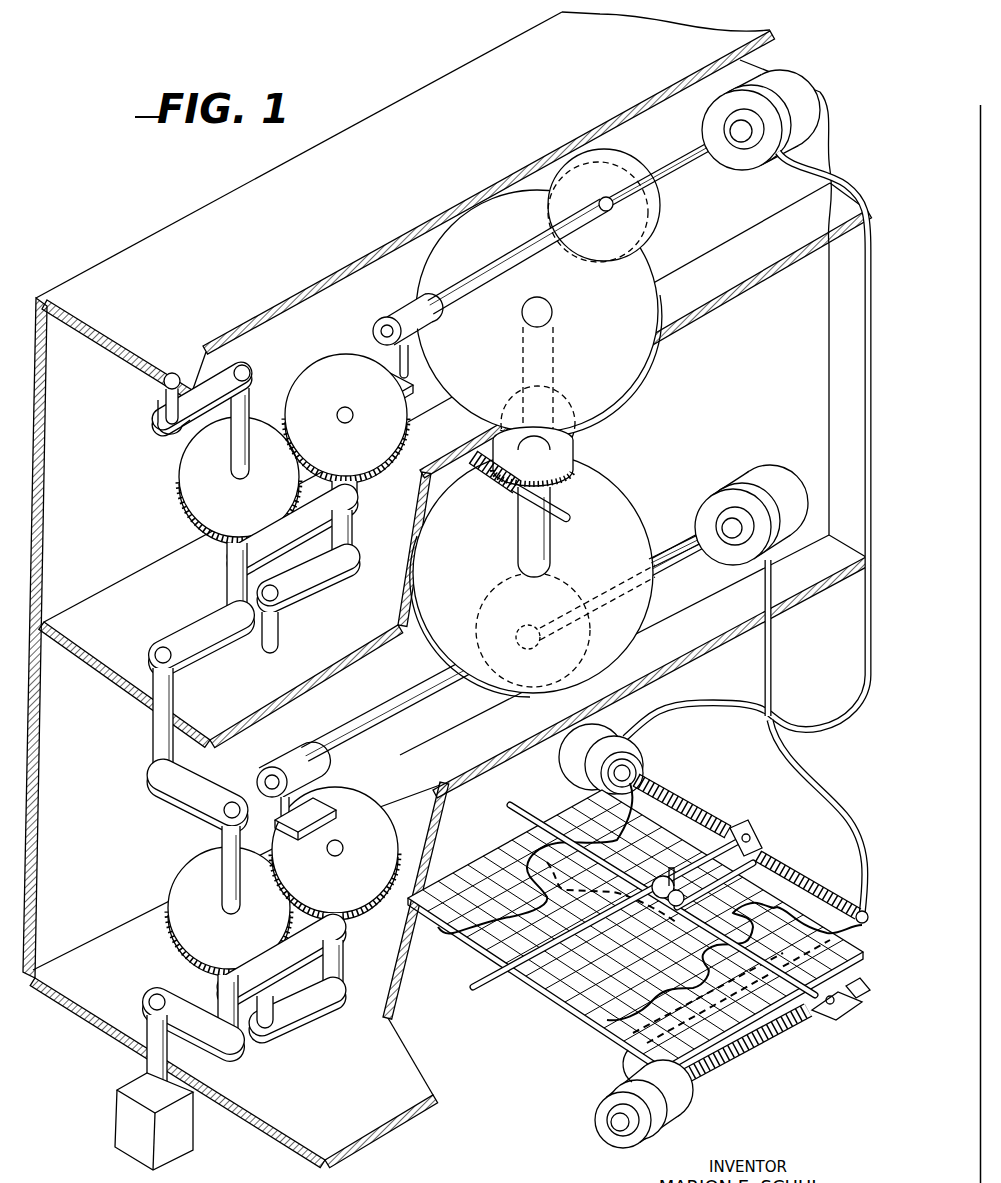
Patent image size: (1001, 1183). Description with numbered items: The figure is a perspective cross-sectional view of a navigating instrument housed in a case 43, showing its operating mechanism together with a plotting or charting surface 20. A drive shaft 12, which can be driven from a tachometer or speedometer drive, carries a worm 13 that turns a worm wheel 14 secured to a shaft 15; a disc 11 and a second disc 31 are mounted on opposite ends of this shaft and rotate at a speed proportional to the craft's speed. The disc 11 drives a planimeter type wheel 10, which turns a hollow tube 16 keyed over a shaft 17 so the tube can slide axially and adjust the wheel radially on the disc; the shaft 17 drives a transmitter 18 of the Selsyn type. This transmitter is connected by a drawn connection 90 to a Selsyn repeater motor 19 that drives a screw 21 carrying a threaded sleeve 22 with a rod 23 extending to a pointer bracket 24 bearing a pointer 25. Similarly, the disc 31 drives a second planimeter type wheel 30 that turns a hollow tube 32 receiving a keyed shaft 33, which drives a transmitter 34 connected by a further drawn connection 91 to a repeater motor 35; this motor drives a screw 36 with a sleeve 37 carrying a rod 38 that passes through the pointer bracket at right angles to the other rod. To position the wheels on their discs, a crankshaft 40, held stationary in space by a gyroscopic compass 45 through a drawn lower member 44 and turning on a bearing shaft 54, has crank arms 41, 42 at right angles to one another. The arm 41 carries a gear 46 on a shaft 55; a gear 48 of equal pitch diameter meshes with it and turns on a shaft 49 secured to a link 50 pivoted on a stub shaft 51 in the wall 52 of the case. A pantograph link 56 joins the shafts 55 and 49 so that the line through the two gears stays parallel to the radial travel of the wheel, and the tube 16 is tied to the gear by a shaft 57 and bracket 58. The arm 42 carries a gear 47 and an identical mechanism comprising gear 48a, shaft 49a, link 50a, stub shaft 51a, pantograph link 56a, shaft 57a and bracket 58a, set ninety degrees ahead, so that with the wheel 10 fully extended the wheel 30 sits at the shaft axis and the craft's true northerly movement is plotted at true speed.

The planimeter type wheel 10 is at (660, 208).
The disc 11 is at (648, 276).
The drive shaft 12 is at (572, 518).
The worm 13 is at (488, 478).
The worm wheel 14 is at (576, 447).
The shaft 15 is at (552, 311).
The hollow tube 16 is at (508, 246).
The shaft 17 is at (690, 152).
The transmitter 18 is at (781, 94).
The Selsyn repeater motor 19 is at (574, 766).
The plotting or charting surface 20 is at (462, 862).
The screw 21 is at (668, 792).
The sleeve 22 is at (754, 842).
The rod 23 is at (690, 876).
The pointer bracket 24 is at (674, 868).
The pointer 25 is at (790, 868).
The second planimeter type wheel 30 is at (586, 636).
The disc 31 is at (640, 530).
The hollow tube 32 is at (389, 700).
The shaft 33 is at (684, 520).
The transmitter 34 is at (775, 490).
The repeater motor 35 is at (627, 1137).
The screw 36 is at (722, 1076).
The sleeve 37 is at (820, 1020).
The rod 38 is at (787, 992).
The crankshaft 40 is at (152, 735).
The crank arm 41 is at (216, 362).
The crank arm 42 is at (220, 786).
The case 43 is at (188, 234).
The rod 44 is at (150, 1060).
The gyroscopic compass 45 is at (122, 1112).
The gear 46 is at (180, 483).
The gear 47 is at (185, 880).
The gear 48 is at (335, 362).
The gear 48a is at (378, 815).
The shaft 49 is at (350, 536).
The shaft 49a is at (338, 962).
The link 50 is at (315, 583).
The link 50a is at (330, 1006).
The stub shaft 51 is at (279, 635).
The stub shaft 51a is at (265, 1018).
The wall 52 is at (290, 696).
The bearing shaft 54 is at (158, 401).
The shaft 55 is at (232, 458).
The pantograph link 56 is at (222, 560).
The pantograph link 56a is at (276, 990).
The shaft 57 is at (410, 355).
The shaft 57a is at (292, 806).
The bracket 58 is at (405, 407).
The bracket 58a is at (304, 838).
The cable 90 is at (826, 722).
The cable 91 is at (818, 780).